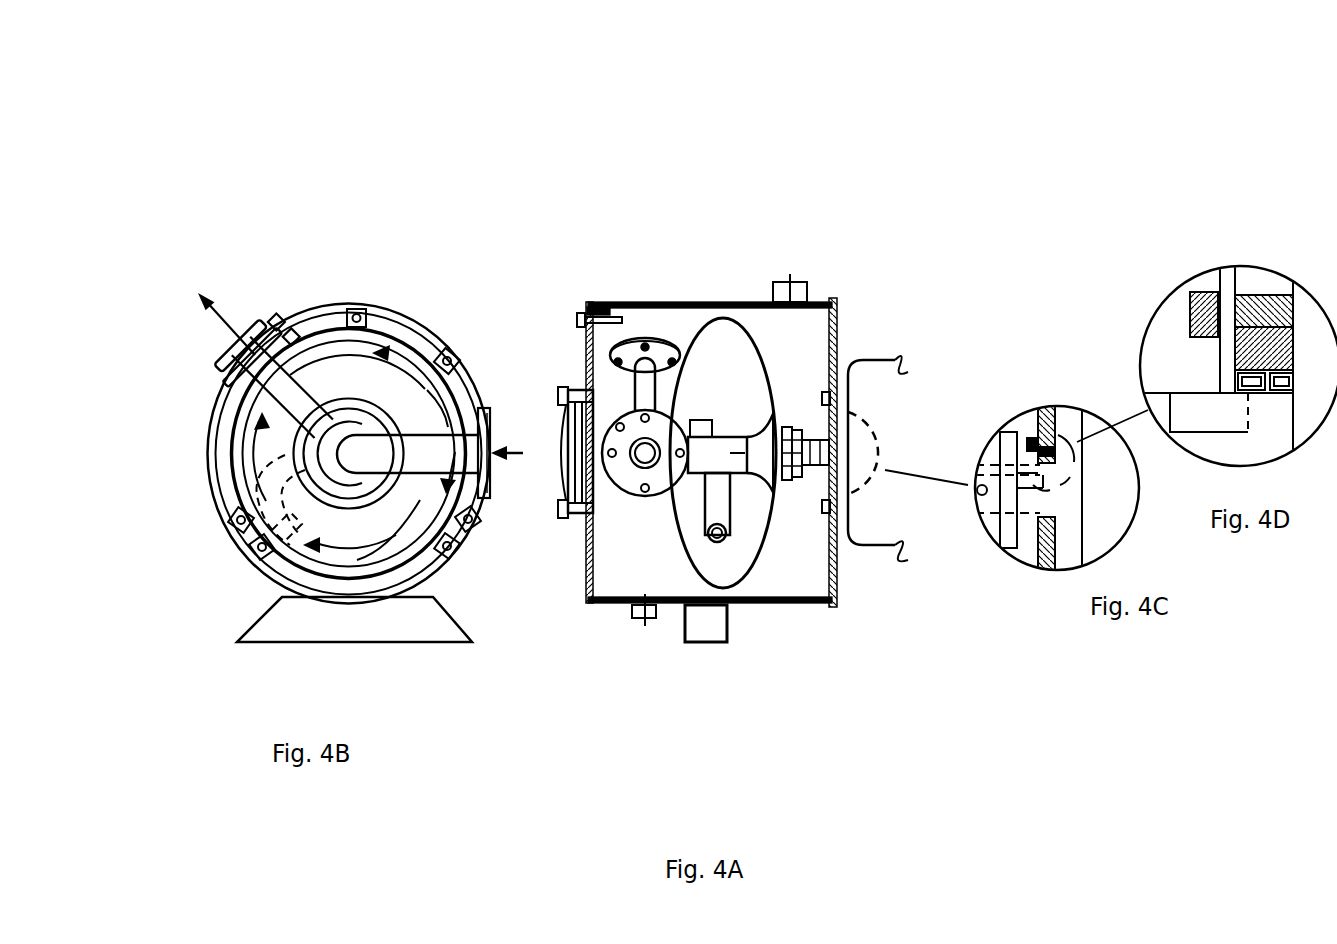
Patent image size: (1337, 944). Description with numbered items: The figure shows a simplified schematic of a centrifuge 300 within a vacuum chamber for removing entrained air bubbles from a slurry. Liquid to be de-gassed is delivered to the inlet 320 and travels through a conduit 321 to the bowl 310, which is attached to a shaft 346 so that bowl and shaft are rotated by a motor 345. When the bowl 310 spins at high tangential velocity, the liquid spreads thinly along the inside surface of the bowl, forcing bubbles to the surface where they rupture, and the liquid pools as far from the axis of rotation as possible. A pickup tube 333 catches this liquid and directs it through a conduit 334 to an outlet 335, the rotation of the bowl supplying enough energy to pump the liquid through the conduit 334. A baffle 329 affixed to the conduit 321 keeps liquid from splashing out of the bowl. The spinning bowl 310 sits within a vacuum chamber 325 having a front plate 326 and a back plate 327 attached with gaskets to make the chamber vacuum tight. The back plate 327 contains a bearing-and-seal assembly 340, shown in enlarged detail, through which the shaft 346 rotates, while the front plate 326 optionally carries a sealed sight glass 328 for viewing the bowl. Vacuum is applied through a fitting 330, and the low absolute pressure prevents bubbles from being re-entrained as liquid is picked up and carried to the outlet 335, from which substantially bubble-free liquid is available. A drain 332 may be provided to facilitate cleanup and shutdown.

In FIG. 4A, the mixing apparatus 300 is at (760, 153).
In FIG. 4A, the bowl 310 is at (775, 387).
In FIG. 4A, the inlet 320 is at (617, 417).
In FIG. 4A, the conduit 321 is at (730, 453).
In FIG. 4B, the conduit 321 is at (370, 352).
In FIG. 4A, the vacuum chamber 325 is at (648, 303).
In FIG. 4B, the vacuum chamber 325 is at (212, 408).
In FIG. 4A, the front plate 326 is at (586, 318).
In FIG. 4A, the back plate 327 is at (838, 547).
In FIG. 4A, the sealed sight glass 328 is at (567, 447).
In FIG. 4B, the baffle 329 is at (300, 355).
In FIG. 4A, the fitting 330 is at (805, 300).
In FIG. 4A, the drain 332 is at (644, 620).
In FIG. 4A, the pickup tube 333 is at (718, 462).
In FIG. 4B, the pickup tube 333 is at (283, 515).
In FIG. 4A, the conduit 334 is at (705, 497).
In FIG. 4B, the outlet 335 is at (240, 352).
In FIG. 4D, the bearing-and-seal assembly 340 is at (1158, 309).
In FIG. 4A, the motor 345 is at (880, 545).
In FIG. 4A, the shaft 346 is at (800, 442).